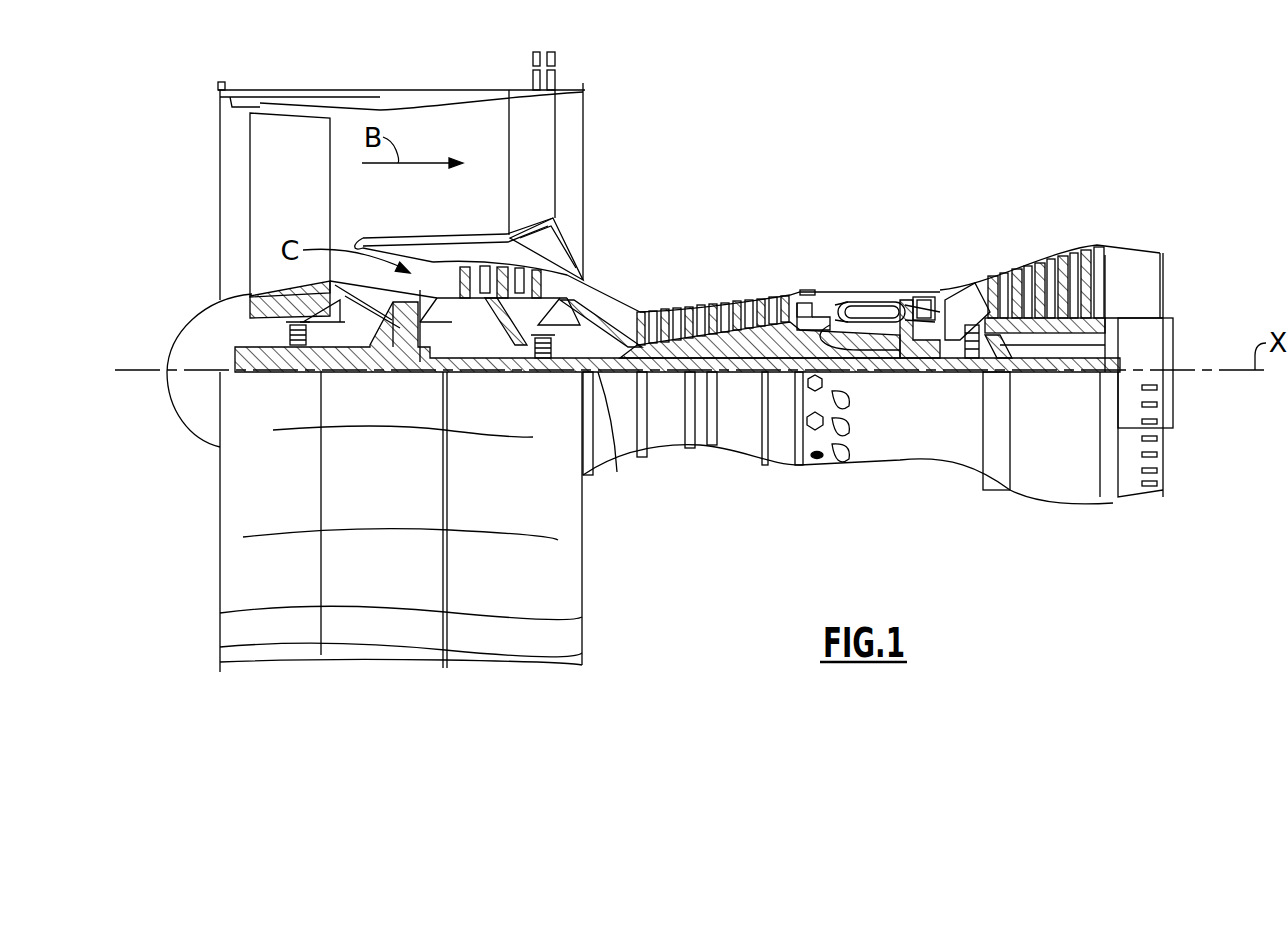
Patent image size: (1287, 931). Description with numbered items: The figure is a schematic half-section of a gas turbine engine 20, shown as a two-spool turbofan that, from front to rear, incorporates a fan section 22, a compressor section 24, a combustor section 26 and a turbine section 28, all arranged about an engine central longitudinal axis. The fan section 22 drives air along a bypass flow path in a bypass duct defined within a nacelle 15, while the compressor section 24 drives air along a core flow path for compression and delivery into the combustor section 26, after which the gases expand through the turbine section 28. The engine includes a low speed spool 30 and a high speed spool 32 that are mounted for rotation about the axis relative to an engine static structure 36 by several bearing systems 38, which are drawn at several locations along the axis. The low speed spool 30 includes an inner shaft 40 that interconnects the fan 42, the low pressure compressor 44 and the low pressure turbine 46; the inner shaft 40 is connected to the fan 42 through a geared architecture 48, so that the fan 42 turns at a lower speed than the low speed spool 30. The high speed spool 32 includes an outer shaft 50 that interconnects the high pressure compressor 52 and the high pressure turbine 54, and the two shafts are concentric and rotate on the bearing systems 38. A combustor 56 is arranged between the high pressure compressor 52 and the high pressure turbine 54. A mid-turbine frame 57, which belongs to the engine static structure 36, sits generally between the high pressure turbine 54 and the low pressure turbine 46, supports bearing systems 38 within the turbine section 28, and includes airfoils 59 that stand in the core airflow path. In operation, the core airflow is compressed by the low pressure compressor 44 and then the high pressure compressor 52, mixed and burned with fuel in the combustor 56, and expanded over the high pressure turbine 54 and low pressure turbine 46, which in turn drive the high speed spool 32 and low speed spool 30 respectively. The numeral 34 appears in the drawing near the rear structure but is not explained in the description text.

The nacelle 15 is at (410, 91).
The gas turbine engine 20 is at (866, 135).
The fan section 22 is at (205, 62).
The compressor section 24 is at (783, 210).
The combustor section 26 is at (892, 210).
The turbine section 28 is at (902, 210).
The low speed spool 30 is at (740, 388).
The high speed spool 32 is at (785, 313).
The turbine exhaust case 34 is at (1068, 332).
The engine static structure 36 is at (782, 474).
The bearing systems 38 is at (300, 372).
The inner shaft 40 is at (603, 378).
The fan 42 is at (305, 217).
The low pressure compressor 44 is at (583, 233).
The low pressure turbine 46 is at (1042, 258).
The geared architecture 48 is at (408, 352).
The outer shaft 50 is at (862, 367).
The high pressure compressor 52 is at (710, 335).
The high pressure turbine 54 is at (924, 292).
The combustor 56 is at (858, 313).
The mid-turbine frame 57 is at (964, 276).
The airfoils 59 is at (1005, 346).